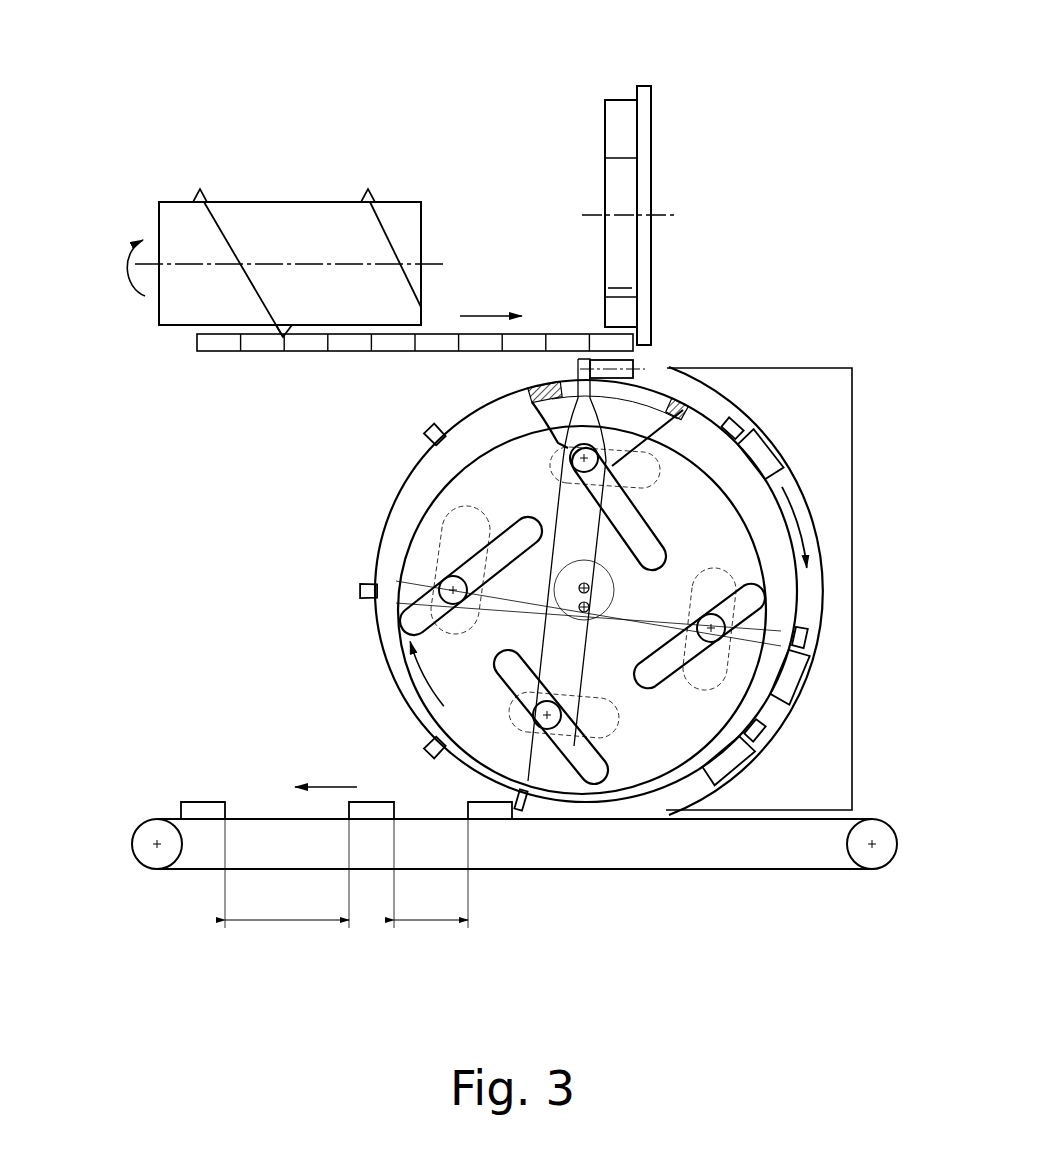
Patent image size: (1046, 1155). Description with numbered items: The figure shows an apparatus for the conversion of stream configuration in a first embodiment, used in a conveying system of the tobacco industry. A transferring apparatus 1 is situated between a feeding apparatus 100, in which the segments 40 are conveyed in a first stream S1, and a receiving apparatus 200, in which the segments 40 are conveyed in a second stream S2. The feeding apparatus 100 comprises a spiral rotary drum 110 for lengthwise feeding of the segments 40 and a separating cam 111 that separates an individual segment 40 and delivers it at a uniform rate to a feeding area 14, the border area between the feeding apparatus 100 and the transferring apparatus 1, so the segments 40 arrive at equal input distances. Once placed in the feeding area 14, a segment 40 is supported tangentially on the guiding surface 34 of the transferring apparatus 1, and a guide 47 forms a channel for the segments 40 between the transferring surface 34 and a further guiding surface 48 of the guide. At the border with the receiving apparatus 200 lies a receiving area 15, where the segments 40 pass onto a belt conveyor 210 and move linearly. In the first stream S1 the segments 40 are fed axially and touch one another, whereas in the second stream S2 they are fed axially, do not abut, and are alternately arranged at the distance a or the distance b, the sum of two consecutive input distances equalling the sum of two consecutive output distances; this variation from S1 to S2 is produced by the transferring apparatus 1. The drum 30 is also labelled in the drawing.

The transferring apparatus 1 is at (343, 642).
The feeding area 14 is at (672, 334).
The receiving area 15 is at (669, 839).
The rotary drum 30 is at (703, 438).
The guiding surface 34 is at (799, 614).
The segments 40 is at (440, 340).
The guide 47 is at (826, 518).
The guiding surface 48 is at (797, 474).
The feeding apparatus 100 is at (273, 126).
The spiral rotary drum 110 is at (398, 207).
The separating cam 111 is at (628, 143).
The receiving apparatus 200 is at (188, 921).
The belt conveyor 210 is at (560, 819).
The first stream S1 is at (236, 364).
The second stream S2 is at (180, 791).
The distance a is at (431, 873).
The distance b is at (287, 873).